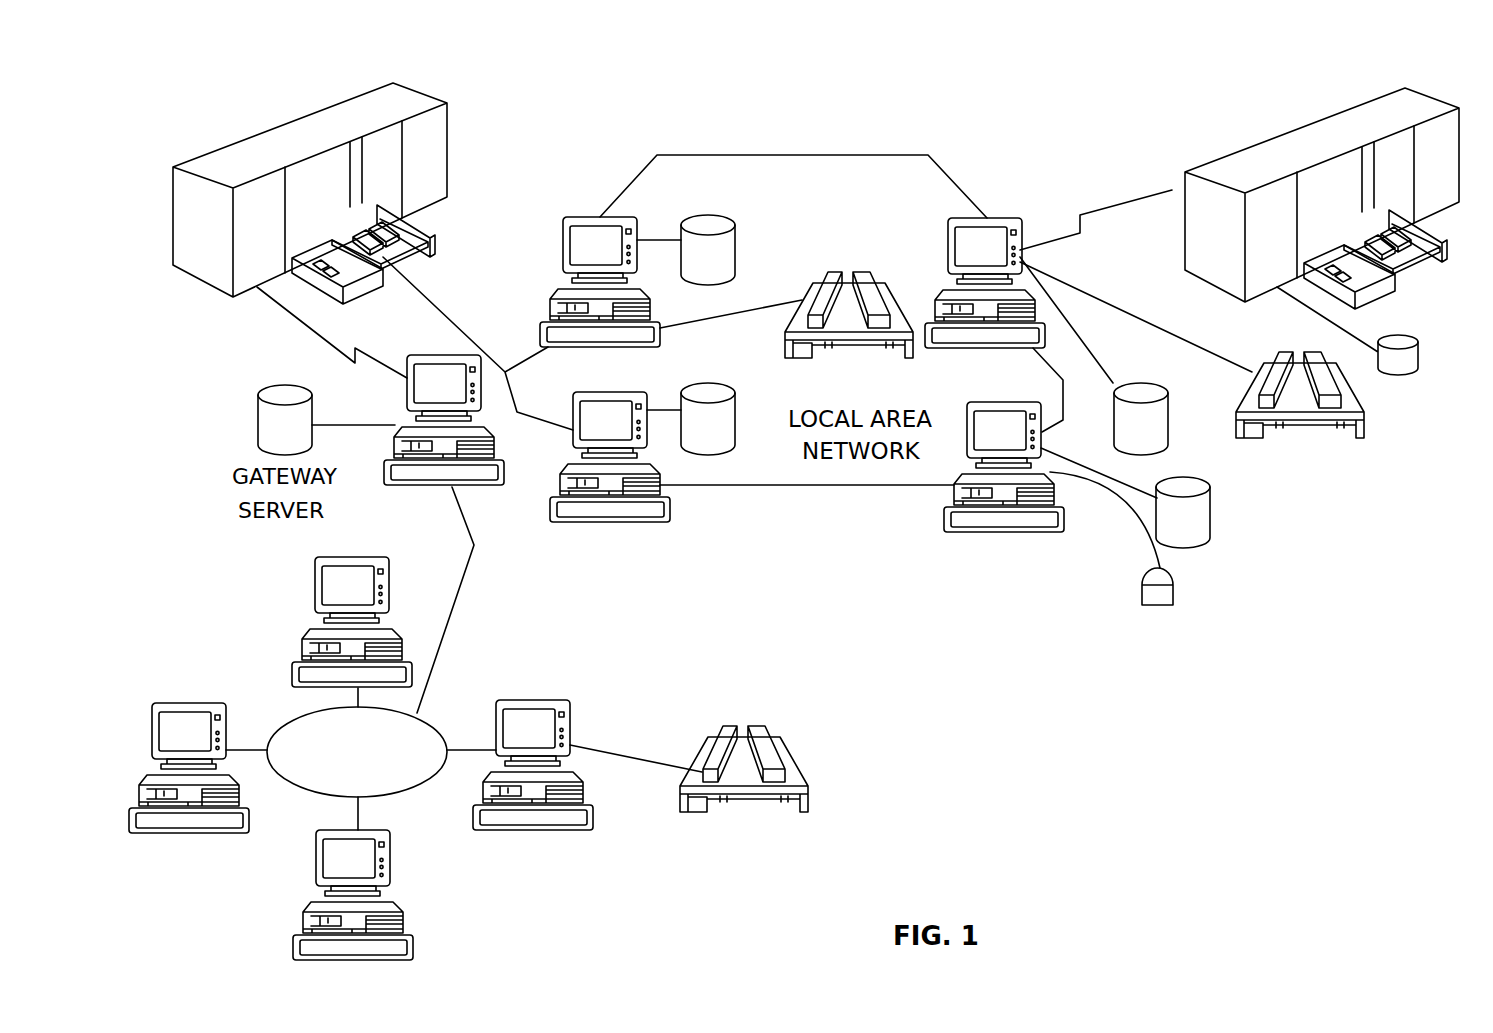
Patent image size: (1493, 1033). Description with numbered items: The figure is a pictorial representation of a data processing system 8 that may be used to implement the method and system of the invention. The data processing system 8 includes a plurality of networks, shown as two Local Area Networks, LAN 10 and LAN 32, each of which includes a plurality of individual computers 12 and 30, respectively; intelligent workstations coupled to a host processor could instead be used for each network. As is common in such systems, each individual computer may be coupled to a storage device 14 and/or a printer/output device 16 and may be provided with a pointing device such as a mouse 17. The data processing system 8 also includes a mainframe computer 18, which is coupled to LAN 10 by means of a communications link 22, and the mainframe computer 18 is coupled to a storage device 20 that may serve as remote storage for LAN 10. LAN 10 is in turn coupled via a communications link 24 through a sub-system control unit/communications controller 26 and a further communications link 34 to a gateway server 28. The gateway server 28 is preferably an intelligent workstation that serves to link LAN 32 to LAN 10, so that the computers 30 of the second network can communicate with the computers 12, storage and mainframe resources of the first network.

The data processing system 8 is at (860, 155).
The Local Area Network 10 is at (780, 486).
The individual computer 12 is at (572, 215).
The storage device 14 is at (725, 213).
The printer/output device 16 is at (833, 272).
The mouse 17 is at (1173, 596).
The mainframe computer 18 is at (1303, 125).
The storage device 20 is at (1420, 353).
The communications link 22 is at (1155, 190).
The communications link 24 is at (443, 312).
The sub-system control unit/communications controller 26 is at (252, 135).
The gateway server 28 is at (403, 393).
The individual computer 30 is at (315, 587).
The Local Area Network 32 is at (403, 790).
The communications link 34 is at (295, 317).